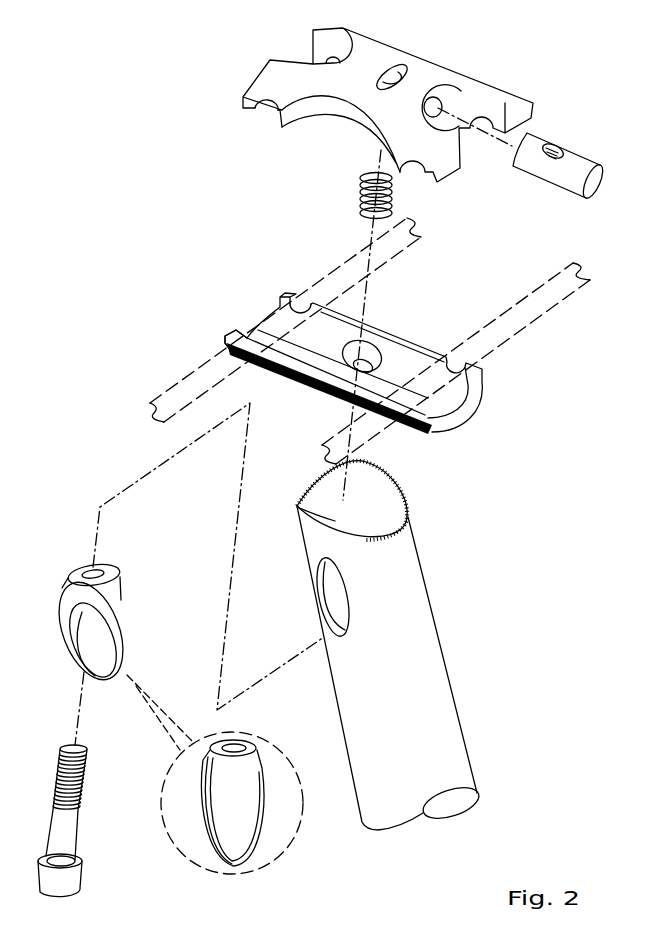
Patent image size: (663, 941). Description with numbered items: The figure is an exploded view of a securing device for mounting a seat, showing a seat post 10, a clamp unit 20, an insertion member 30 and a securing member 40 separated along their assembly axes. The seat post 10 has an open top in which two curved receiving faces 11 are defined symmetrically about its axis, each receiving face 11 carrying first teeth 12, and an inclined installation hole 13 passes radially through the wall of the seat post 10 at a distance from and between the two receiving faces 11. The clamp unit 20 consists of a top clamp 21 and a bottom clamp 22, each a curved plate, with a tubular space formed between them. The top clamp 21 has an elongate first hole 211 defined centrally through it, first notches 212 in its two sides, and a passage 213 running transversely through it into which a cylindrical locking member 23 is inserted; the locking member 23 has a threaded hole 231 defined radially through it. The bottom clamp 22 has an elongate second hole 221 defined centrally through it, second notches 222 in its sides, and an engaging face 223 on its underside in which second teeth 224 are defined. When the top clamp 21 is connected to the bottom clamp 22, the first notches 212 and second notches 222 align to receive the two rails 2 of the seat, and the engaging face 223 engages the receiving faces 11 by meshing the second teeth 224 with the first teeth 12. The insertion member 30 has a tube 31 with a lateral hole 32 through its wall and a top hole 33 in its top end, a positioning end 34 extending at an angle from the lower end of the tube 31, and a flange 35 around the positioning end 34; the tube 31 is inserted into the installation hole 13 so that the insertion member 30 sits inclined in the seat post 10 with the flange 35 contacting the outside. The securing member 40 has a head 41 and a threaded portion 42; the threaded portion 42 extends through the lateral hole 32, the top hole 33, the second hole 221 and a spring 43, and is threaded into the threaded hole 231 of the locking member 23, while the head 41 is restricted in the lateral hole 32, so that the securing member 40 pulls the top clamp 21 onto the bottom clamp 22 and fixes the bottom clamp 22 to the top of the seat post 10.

The rails 2 is at (517, 323).
The seat post 10 is at (382, 623).
The receiving faces 11 is at (389, 492).
The first teeth 12 is at (303, 507).
The installation hole 13 is at (330, 588).
The clamp unit 20 is at (122, 165).
The top clamp 21 is at (252, 53).
The first hole 211 is at (400, 68).
The first notches 212 is at (258, 112).
The passage 213 is at (433, 107).
The bottom clamp 22 is at (305, 336).
The second hole 221 is at (367, 363).
The second notches 222 is at (310, 296).
The engaging face 223 is at (187, 343).
The second teeth 224 is at (226, 350).
The locking member 23 is at (550, 155).
The threaded hole 231 is at (557, 148).
The insertion member 30 is at (192, 697).
The tube 31 is at (112, 593).
The lateral hole 32 is at (98, 657).
The top hole 33 is at (90, 570).
The positioning end 34 is at (68, 661).
The flange 35 is at (123, 636).
The securing member 40 is at (108, 830).
The head 41 is at (77, 878).
The threaded portion 42 is at (83, 777).
The spring 43 is at (358, 192).